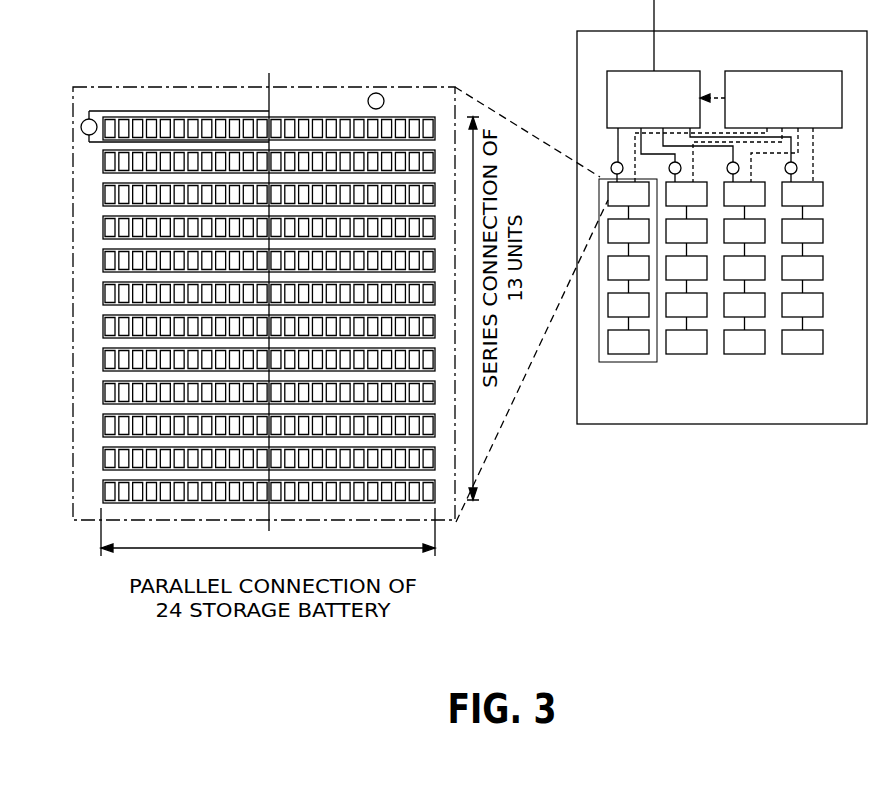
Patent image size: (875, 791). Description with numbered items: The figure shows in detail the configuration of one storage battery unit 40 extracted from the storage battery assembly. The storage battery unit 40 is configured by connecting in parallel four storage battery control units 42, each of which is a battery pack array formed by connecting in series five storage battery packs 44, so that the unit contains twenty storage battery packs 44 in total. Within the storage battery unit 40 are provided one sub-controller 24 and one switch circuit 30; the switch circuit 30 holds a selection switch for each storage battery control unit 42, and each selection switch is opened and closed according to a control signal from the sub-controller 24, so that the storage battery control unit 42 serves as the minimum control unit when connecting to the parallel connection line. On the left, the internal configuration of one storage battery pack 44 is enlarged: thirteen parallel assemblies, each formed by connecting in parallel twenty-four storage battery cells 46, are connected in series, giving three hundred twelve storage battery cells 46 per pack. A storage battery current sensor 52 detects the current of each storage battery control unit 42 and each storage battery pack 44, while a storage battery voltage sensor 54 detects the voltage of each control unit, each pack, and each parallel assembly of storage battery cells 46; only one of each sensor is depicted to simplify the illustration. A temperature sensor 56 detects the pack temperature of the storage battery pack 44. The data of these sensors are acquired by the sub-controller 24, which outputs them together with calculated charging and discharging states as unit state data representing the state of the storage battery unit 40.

The sub-controller 24 is at (822, 128).
The switch circuit 30 is at (682, 71).
The storage battery unit 40 is at (727, 424).
The storage battery control unit 42 is at (625, 362).
The storage battery pack 44 is at (418, 87).
The storage battery cell 46 is at (101, 452).
The storage battery current sensor 52 is at (612, 164).
The storage battery voltage sensor 54 is at (81, 126).
The temperature sensor 56 is at (370, 93).